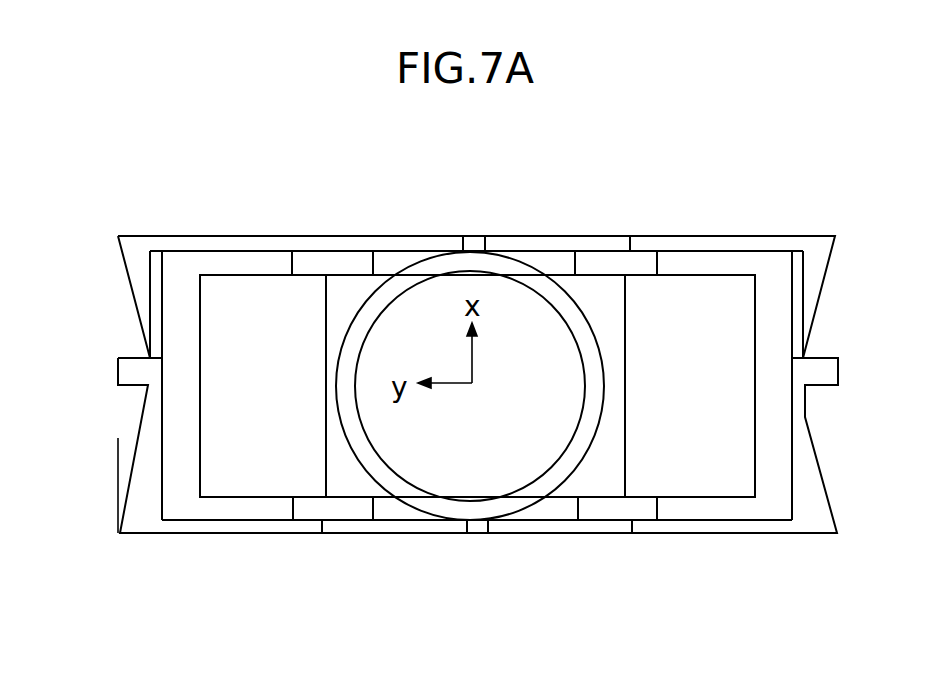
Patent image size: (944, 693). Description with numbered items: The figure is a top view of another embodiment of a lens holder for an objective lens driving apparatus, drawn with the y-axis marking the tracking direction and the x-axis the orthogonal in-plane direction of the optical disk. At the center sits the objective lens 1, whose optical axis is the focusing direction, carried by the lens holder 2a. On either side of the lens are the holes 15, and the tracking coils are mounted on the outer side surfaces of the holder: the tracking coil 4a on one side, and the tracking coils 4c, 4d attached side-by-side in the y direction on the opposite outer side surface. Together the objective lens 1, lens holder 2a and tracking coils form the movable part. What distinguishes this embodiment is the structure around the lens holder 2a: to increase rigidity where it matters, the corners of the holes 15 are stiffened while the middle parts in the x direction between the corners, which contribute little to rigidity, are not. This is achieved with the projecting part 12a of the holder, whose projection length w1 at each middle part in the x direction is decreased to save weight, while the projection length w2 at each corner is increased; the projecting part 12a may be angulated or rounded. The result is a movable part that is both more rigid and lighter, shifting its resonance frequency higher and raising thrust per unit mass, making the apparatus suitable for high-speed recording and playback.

The objective lens 1 is at (410, 332).
The lens holder 2a is at (243, 263).
The tracking coil 4a is at (400, 527).
The tracking coil 4c is at (385, 247).
The tracking coil 4d is at (545, 248).
The projecting part 12a is at (147, 507).
The hole 15 is at (253, 448).
The projection length w1 is at (190, 403).
The projection length w2 is at (162, 456).